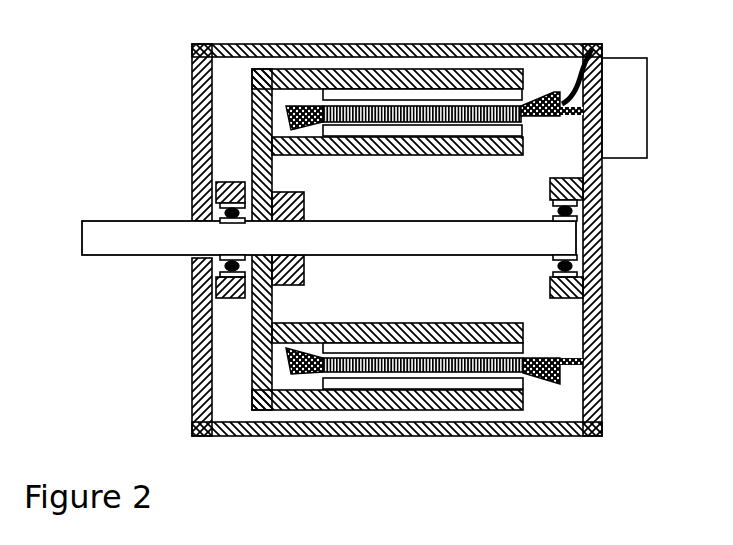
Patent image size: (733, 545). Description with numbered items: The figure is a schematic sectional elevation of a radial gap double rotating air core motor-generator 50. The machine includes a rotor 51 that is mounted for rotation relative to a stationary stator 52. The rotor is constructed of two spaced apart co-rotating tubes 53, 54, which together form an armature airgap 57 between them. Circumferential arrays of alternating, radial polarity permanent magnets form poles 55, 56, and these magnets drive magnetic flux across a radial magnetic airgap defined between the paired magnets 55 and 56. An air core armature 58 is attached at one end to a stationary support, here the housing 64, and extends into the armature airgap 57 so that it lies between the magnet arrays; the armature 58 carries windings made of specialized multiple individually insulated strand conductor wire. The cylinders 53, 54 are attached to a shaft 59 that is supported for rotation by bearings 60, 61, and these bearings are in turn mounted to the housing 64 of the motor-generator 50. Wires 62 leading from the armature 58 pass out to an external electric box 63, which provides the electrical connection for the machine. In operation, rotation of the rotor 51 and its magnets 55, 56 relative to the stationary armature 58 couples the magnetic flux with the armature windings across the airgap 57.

The radial gap double rotating air core motor-generator 50 is at (116, 48).
The rotor 51 is at (240, 70).
The stator 52 is at (544, 78).
The co-rotating tube 53 is at (414, 88).
The co-rotating tube 54 is at (414, 125).
The permanent magnet poles 55 is at (422, 350).
The permanent magnet poles 56 is at (422, 388).
The armature airgap 57 is at (538, 352).
The air core armature 58 is at (567, 368).
The shaft 59 is at (490, 219).
The bearing 60 is at (578, 204).
The bearing 61 is at (222, 206).
The wires 62 is at (602, 49).
The electric box 63 is at (650, 99).
The housing 64 is at (604, 302).